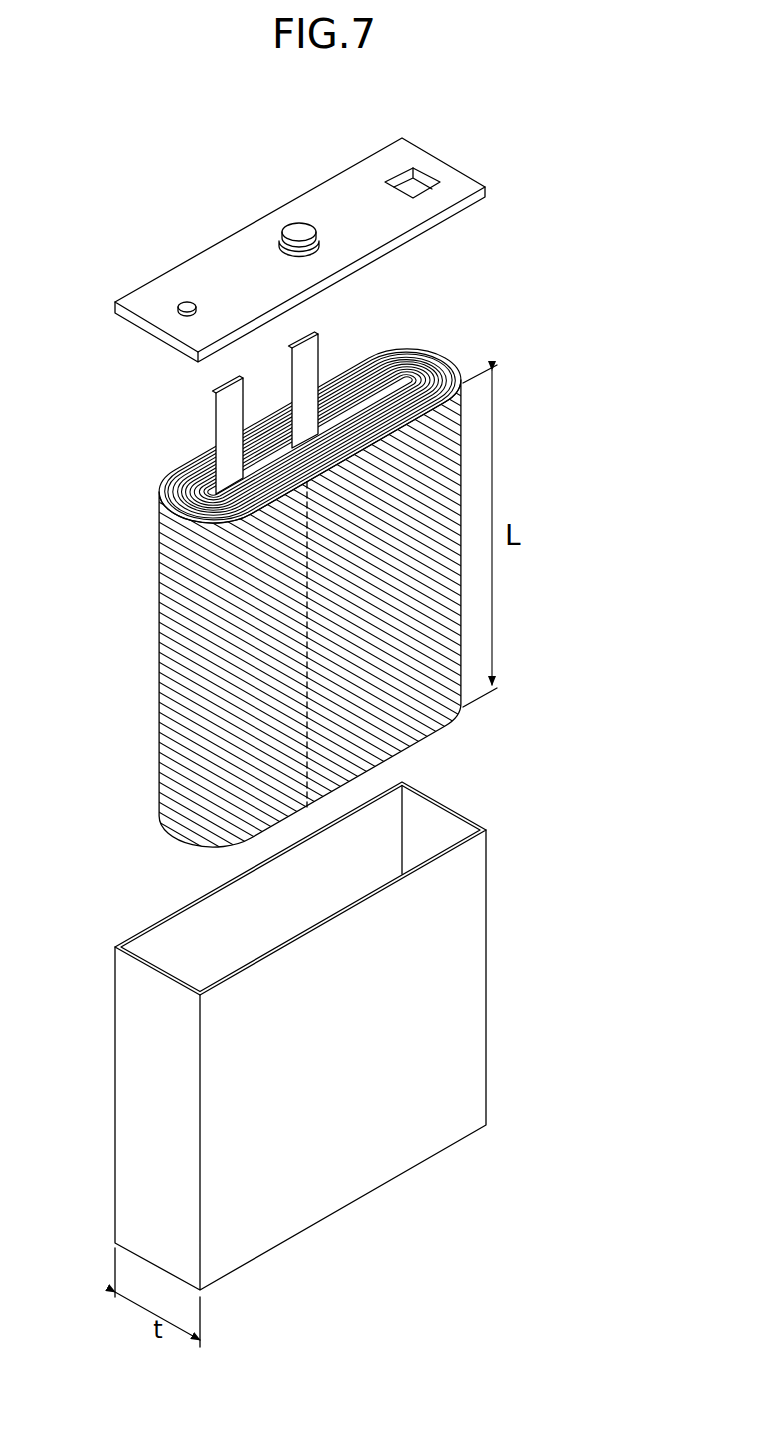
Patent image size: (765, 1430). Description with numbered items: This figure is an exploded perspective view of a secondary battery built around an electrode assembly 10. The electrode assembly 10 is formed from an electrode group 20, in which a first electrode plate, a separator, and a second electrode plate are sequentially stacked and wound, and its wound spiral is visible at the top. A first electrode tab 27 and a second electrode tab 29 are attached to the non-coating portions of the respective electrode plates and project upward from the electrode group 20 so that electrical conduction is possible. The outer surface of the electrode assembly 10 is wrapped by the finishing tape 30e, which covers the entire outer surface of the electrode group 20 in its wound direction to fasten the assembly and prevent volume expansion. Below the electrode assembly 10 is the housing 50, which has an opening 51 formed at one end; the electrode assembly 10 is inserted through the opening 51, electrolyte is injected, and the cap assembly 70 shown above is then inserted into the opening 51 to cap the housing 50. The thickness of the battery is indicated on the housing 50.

The electrode assembly 10 is at (287, 599).
The electrode group 20 is at (447, 358).
The first electrode tab 27 is at (223, 408).
The second electrode tab 29 is at (313, 357).
The finishing tape 30e is at (173, 593).
The housing 50 is at (348, 1015).
The opening 51 is at (455, 832).
The cap assembly 70 is at (477, 165).